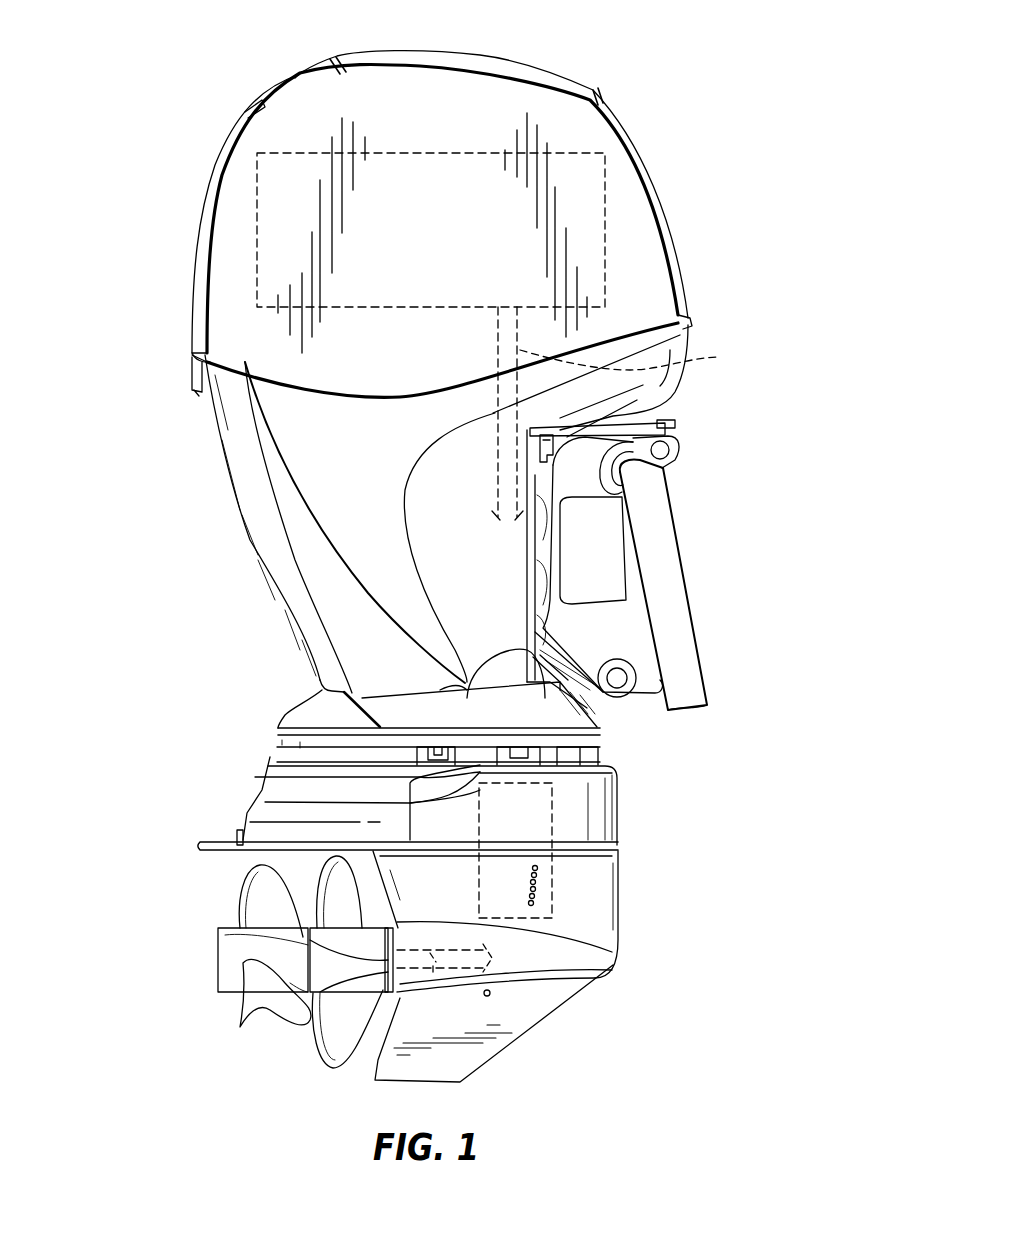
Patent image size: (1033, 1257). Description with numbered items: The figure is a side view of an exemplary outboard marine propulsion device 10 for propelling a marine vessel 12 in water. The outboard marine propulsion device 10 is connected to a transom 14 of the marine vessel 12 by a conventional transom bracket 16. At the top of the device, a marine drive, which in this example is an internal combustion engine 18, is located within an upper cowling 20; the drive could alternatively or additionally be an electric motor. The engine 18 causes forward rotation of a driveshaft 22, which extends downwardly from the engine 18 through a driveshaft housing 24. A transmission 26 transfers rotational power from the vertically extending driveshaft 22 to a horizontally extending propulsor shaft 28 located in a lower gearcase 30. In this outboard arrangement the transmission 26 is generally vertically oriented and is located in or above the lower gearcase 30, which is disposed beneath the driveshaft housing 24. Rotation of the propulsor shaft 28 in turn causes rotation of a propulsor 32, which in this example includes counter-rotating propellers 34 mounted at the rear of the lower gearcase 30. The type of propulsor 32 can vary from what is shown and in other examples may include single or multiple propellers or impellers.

The outboard marine propulsion device 10 is at (655, 69).
The marine vessel 12 is at (743, 580).
The transom 14 is at (673, 665).
The transom bracket 16 is at (583, 553).
The internal combustion engine 18 is at (606, 198).
The upper cowling 20 is at (676, 252).
The driveshaft 22 is at (621, 413).
The driveshaft housing 24 is at (247, 537).
The transmission 26 is at (553, 808).
The propulsor shaft 28 is at (430, 983).
The lower gearcase 30 is at (620, 920).
The propulsor 32 is at (218, 1019).
The counter-rotating propellers 34 is at (237, 940).